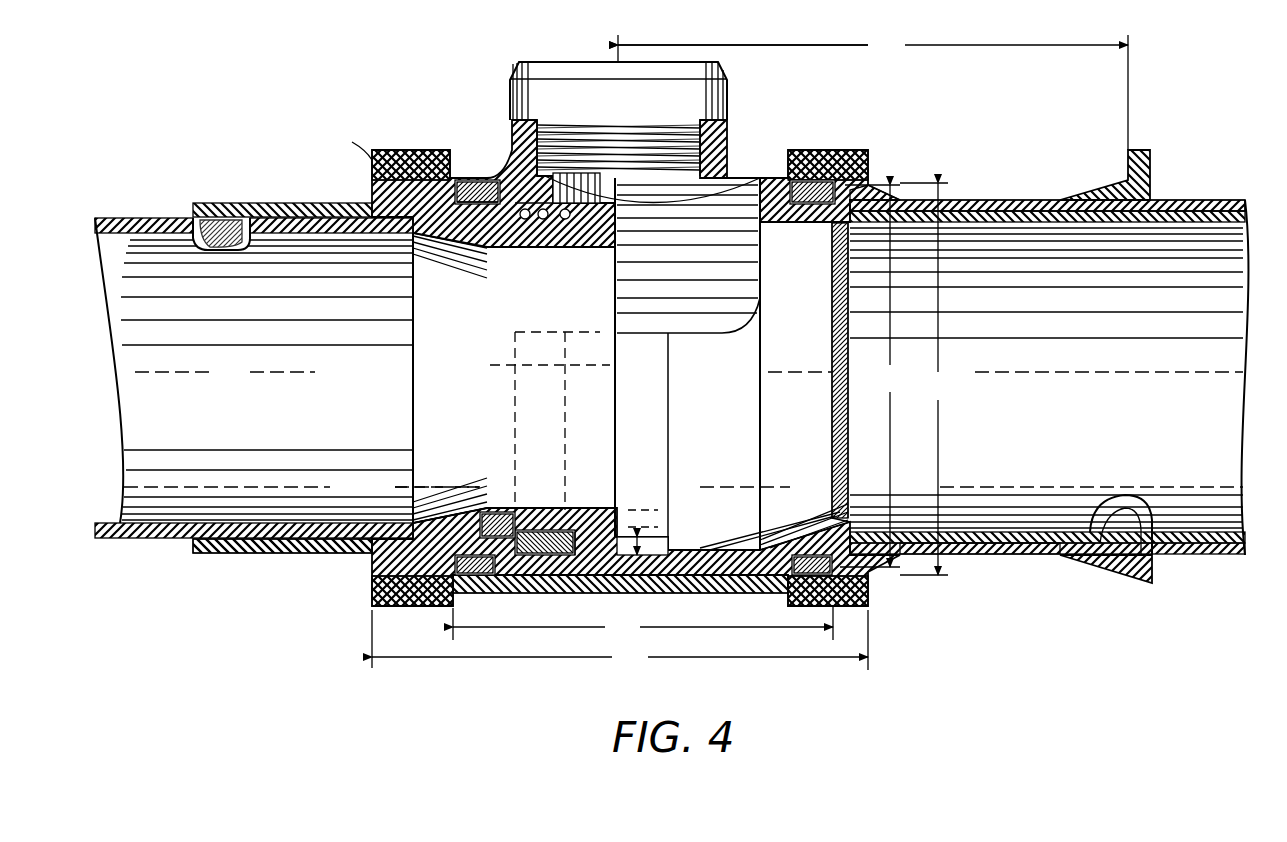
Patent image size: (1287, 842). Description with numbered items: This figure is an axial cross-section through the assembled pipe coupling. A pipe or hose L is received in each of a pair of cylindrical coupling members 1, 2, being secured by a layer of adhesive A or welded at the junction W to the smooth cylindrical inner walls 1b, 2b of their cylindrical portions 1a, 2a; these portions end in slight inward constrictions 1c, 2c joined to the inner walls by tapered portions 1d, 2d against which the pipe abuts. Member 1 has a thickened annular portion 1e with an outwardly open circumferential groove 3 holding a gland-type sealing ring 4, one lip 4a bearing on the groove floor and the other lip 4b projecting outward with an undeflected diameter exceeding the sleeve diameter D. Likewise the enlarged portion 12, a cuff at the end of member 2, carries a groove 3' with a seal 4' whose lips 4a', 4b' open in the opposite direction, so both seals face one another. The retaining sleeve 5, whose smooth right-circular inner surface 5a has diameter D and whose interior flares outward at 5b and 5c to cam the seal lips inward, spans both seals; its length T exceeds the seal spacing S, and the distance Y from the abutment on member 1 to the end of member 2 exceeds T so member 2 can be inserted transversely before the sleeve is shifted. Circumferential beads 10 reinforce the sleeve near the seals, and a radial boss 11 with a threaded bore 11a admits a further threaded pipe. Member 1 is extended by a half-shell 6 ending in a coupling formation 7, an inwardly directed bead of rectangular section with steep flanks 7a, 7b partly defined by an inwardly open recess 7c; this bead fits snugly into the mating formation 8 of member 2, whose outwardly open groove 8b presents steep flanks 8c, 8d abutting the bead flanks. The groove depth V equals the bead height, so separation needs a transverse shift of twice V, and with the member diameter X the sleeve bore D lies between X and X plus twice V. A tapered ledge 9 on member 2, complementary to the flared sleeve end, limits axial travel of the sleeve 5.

The coupling member 1 is at (1012, 198).
The cylindrical portion 1a is at (1048, 200).
The cylindrical inner wall 1b is at (1154, 556).
The inward constriction 1c is at (766, 505).
The tapered portion 1d is at (849, 520).
The thickened annular portion 1e is at (832, 236).
The coupling member 2 is at (267, 200).
The cylindrical portion 2a is at (240, 556).
The cylindrical inner wall 2b is at (204, 214).
The inward constriction 2c is at (486, 506).
The tapered portion 2d is at (412, 520).
The circumferential groove 3 is at (812, 155).
The circumferential groove 3' is at (477, 146).
The gland-type sealing ring 4 is at (636, 363).
The gland-type seal 4' is at (477, 157).
The lip 4a is at (775, 514).
The lip 4a' is at (450, 499).
The lip 4b is at (790, 585).
The lip 4b' is at (481, 585).
The retaining sleeve 5 is at (550, 578).
The inner surface 5a is at (714, 578).
The flared portion 5b is at (862, 186).
The flared portion 5c is at (376, 578).
The half-shell 6 is at (655, 575).
The coupling formation 7 is at (546, 512).
The flank 7a is at (500, 512).
The flank 7b is at (580, 560).
The recess 7c is at (672, 540).
The mating formation 8 is at (575, 205).
The outwardly open groove 8b is at (545, 222).
The flank 8c is at (578, 243).
The flank 8d is at (518, 246).
The tapered ledge 9 is at (1162, 158).
The circumferential beads 10 is at (408, 150).
The radial boss 11 is at (549, 60).
The threaded bore 11a is at (690, 135).
The enlarged portion 12 is at (437, 228).
The layer of adhesive A is at (213, 205).
The pipe or hose L is at (1230, 206).
The welded junction W is at (1052, 556).
The diameter of coupling members X is at (870, 376).
The distance between abutment and end of member 2 Y is at (873, 91).
The diameter of retaining sleeve D is at (924, 379).
The distance between seals S is at (643, 623).
The length of retaining sleeve T is at (620, 640).
The depth of groove V is at (642, 547).